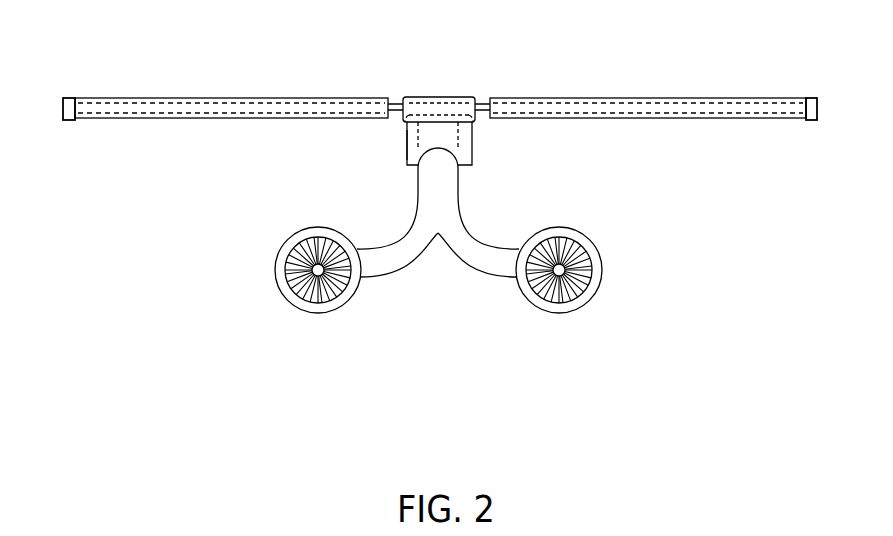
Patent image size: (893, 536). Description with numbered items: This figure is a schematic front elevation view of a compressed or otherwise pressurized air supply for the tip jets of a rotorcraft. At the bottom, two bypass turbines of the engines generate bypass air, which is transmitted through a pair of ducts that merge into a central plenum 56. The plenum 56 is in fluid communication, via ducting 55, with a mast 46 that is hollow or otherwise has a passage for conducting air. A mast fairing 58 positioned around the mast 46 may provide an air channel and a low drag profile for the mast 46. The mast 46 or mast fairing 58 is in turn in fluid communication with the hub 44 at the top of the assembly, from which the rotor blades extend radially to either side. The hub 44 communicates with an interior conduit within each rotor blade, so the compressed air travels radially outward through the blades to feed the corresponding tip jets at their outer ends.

The hub 44 is at (438, 97).
The mast 46 is at (472, 140).
The ducting 55 is at (417, 157).
The plenum 56 is at (454, 181).
The mast fairing 58 is at (407, 140).